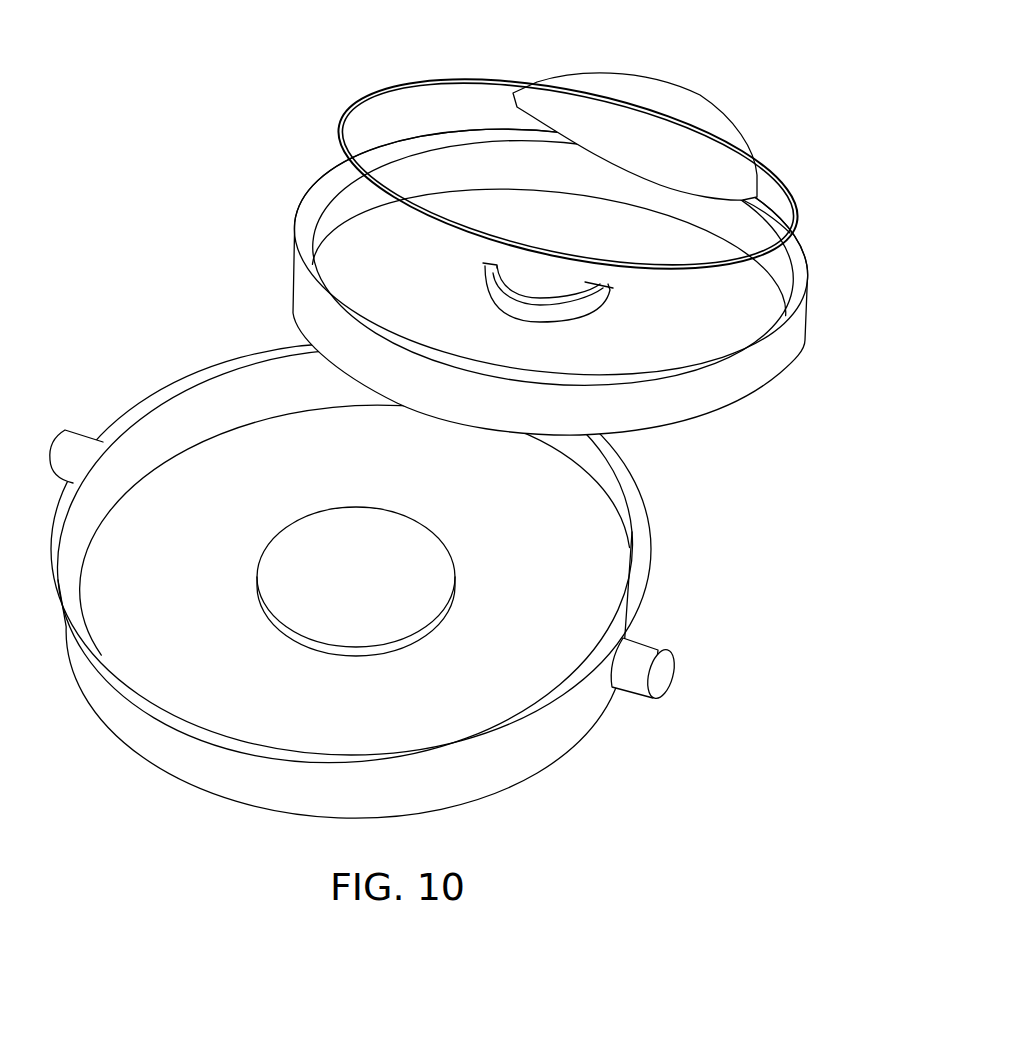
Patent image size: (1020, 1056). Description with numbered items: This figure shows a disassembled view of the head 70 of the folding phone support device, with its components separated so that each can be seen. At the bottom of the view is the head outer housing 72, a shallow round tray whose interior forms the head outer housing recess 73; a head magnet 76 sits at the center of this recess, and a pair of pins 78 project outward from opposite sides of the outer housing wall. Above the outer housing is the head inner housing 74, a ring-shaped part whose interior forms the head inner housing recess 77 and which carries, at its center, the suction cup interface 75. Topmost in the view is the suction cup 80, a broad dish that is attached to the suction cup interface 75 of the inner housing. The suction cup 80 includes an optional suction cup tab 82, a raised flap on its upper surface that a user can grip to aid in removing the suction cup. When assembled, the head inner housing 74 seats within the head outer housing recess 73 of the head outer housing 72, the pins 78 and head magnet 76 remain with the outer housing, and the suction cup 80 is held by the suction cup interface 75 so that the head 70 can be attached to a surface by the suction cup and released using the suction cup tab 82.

The head 70 is at (148, 162).
The head outer housing 72 is at (565, 727).
The head outer housing recess 73 is at (565, 572).
The head inner housing 74 is at (760, 367).
The suction cup interface 75 is at (593, 303).
The head magnet 76 is at (293, 567).
The head inner housing recess 77 is at (345, 267).
The pins 78 is at (77, 443).
The suction cup 80 is at (773, 200).
The suction cup tab 82 is at (697, 110).